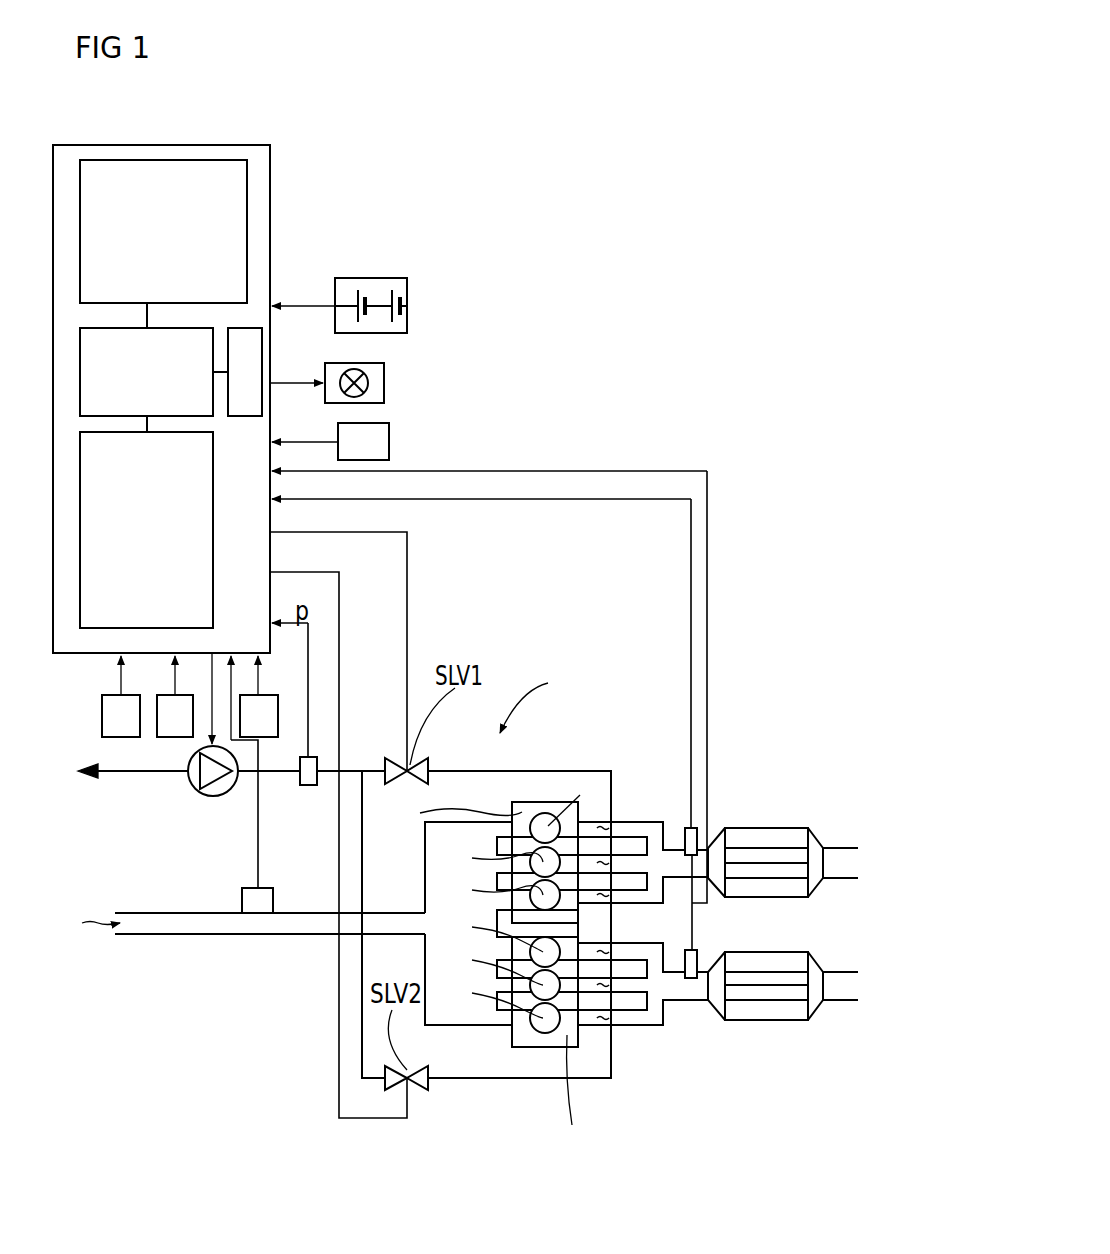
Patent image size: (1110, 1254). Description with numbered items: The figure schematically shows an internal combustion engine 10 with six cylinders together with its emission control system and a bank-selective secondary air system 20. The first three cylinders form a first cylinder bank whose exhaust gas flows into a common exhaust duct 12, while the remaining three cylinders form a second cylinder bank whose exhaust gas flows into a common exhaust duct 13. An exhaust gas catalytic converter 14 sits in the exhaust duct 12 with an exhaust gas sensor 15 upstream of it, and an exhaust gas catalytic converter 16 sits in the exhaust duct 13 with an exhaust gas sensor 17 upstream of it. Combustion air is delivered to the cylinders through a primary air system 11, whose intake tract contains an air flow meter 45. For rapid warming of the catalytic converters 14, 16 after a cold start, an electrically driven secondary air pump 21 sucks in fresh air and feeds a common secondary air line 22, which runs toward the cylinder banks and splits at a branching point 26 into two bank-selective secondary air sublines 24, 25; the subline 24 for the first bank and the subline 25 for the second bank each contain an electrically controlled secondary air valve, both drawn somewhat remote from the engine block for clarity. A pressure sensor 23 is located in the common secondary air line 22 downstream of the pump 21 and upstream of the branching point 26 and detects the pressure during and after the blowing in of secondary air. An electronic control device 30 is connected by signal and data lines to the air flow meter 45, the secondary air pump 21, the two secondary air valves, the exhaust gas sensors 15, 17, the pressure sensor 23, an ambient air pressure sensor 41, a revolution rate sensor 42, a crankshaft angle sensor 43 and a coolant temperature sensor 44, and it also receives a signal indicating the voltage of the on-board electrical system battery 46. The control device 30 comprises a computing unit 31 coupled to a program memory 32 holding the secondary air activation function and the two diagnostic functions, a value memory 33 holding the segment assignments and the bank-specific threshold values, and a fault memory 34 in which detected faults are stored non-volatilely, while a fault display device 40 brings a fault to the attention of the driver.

The internal combustion engine 10 is at (568, 913).
The primary air system 11 is at (172, 927).
The exhaust duct 12 is at (680, 858).
The exhaust duct 13 is at (690, 985).
The exhaust gas catalytic converter 14 is at (758, 838).
The exhaust gas sensor 15 is at (690, 880).
The exhaust gas catalytic converter 16 is at (780, 1008).
The exhaust gas sensor 17 is at (697, 960).
The secondary air system 20 is at (572, 683).
The secondary air pump 21 is at (190, 777).
The common secondary air line 22 is at (322, 768).
The pressure sensor 23 is at (312, 787).
The secondary air subline 24 is at (587, 770).
The secondary air subline 25 is at (382, 838).
The branching point 26 is at (363, 756).
The electronic control device 30 is at (255, 148).
The computing unit 31 is at (197, 338).
The program memory 32 is at (188, 168).
The value memory 33 is at (193, 524).
The fault memory 34 is at (243, 403).
The fault display device 40 is at (375, 391).
The ambient air pressure sensor 41 is at (110, 728).
The revolution rate sensor 42 is at (175, 737).
The crankshaft angle sensor 43 is at (265, 722).
The coolant temperature sensor 44 is at (382, 443).
The air flow meter 45 is at (252, 898).
The on-board electrical system battery 46 is at (400, 322).